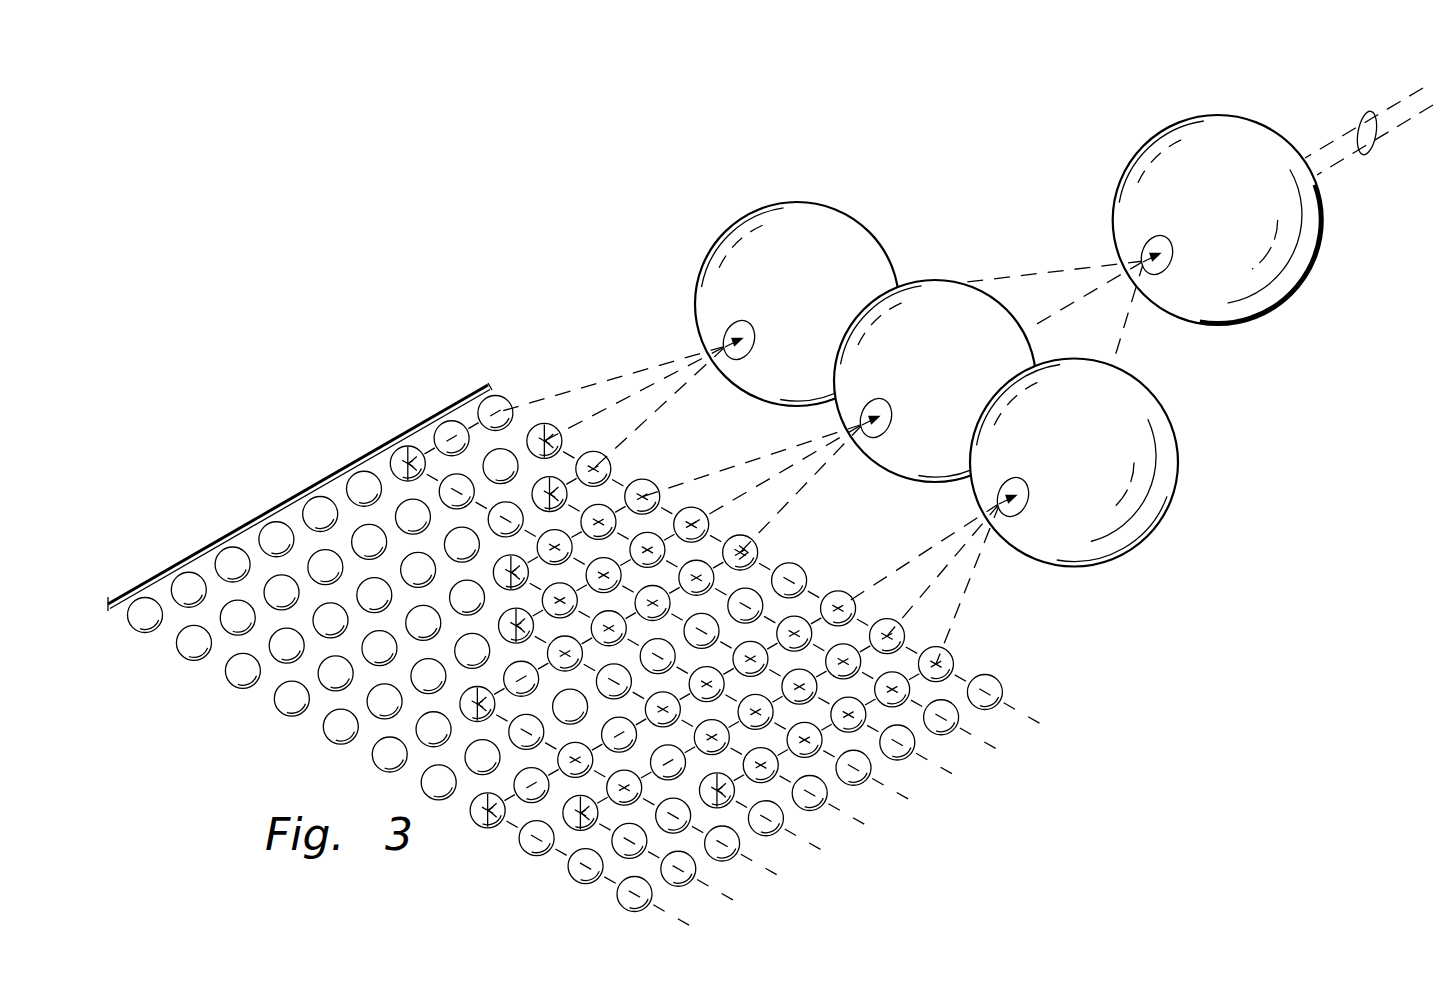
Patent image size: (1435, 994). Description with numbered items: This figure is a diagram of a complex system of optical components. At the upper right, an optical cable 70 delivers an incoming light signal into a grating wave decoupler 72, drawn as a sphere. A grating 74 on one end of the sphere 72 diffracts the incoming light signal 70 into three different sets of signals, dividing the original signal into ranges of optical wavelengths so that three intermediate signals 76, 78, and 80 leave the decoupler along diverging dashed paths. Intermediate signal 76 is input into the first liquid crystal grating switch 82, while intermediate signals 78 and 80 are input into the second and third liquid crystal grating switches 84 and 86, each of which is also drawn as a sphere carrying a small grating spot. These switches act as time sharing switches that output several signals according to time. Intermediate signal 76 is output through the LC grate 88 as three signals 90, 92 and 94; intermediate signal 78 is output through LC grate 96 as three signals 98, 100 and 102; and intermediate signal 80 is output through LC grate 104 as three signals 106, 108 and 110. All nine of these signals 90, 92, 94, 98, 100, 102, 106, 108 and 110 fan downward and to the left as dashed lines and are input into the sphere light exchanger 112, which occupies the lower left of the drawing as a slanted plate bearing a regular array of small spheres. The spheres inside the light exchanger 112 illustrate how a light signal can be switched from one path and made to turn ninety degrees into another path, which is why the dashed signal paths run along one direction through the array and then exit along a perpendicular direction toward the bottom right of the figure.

The optical cable 70 is at (1363, 112).
The grating wave decoupler 72 is at (1322, 226).
The grating 74 is at (1160, 237).
The intermediate signal 76 is at (1121, 338).
The intermediate signal 78 is at (1070, 304).
The intermediate signal 80 is at (1033, 273).
The first LC grating switch 82 is at (1178, 465).
The second LC grating switch 84 is at (936, 281).
The third LC grating switch 86 is at (798, 203).
The LC grate 88 is at (1018, 480).
The signal 90 is at (964, 595).
The signal 92 is at (960, 549).
The signal 94 is at (888, 575).
The LC grate 96 is at (882, 400).
The signal 98 is at (790, 500).
The signal 100 is at (798, 462).
The signal 102 is at (752, 460).
The LC grate 104 is at (745, 322).
The signal 106 is at (646, 421).
The signal 108 is at (643, 388).
The signal 110 is at (578, 388).
The sphere light exchanger 112 is at (284, 493).